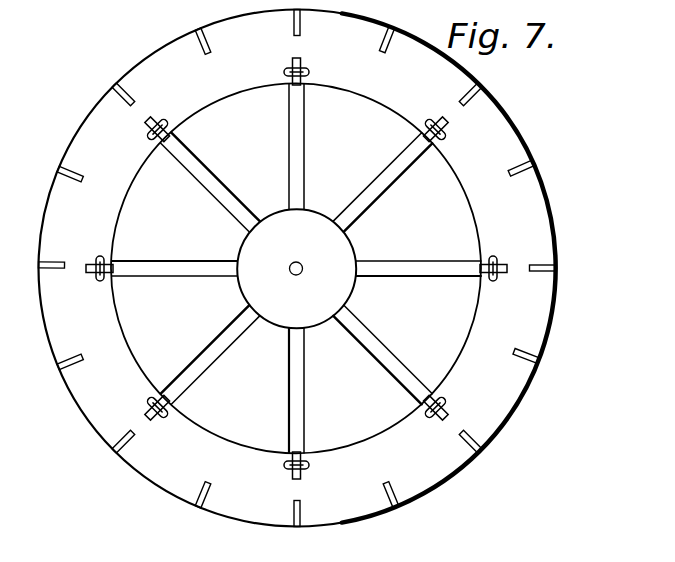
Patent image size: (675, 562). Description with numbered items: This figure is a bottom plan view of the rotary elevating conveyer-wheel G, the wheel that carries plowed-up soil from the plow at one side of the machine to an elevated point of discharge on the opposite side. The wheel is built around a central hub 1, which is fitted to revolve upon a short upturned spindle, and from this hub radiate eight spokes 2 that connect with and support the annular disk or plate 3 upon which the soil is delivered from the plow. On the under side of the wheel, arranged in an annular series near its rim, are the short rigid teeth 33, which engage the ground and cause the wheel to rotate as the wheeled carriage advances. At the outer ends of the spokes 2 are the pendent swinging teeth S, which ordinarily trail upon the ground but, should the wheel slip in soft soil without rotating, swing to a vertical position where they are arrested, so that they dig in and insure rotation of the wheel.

The central hub 1 is at (296, 268).
The spokes 2 is at (295, 151).
The annular disk or plate 3 is at (301, 268).
The rotary elevating conveyer-wheel G is at (297, 268).
The teeth 33 is at (553, 265).
The pendent swinging teeth S is at (487, 279).